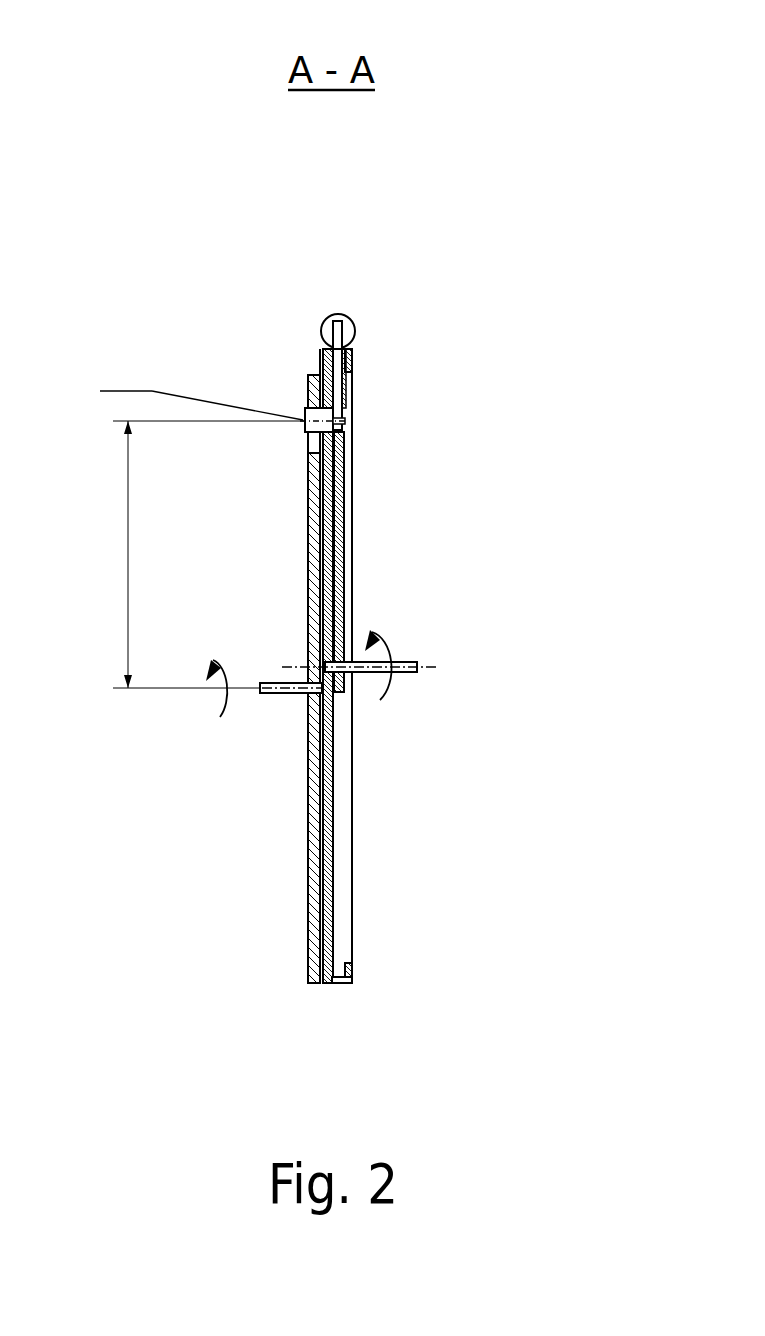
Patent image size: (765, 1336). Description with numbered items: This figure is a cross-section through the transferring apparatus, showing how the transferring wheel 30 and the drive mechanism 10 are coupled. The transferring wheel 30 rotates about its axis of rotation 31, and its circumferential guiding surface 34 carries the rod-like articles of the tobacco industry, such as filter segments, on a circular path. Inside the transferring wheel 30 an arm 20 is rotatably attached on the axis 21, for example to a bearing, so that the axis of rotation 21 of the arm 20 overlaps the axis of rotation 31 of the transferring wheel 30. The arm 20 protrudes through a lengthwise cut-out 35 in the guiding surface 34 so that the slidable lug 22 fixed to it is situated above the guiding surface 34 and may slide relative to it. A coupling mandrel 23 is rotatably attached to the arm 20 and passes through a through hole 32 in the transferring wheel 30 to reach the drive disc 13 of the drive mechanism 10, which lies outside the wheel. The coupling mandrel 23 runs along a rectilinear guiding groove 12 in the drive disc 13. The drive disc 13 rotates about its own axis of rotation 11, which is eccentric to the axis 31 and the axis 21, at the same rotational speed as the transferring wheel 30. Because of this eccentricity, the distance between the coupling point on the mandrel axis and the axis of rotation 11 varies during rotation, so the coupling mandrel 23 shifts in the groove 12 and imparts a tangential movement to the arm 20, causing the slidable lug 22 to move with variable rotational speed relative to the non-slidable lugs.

The drive mechanism 10 is at (307, 574).
The axis of rotation of the drive disc 11 is at (257, 690).
The guiding groove 12 is at (304, 408).
The drive disc 13 is at (310, 553).
The arm 20 is at (340, 518).
The axis of rotation of the arm 21 is at (420, 665).
The slidable lug 22 is at (338, 321).
The coupling mandrel 23 is at (307, 432).
The transferring wheel 30 is at (322, 351).
The axis of rotation of the transferring wheel 31 is at (404, 731).
The through hole 32 is at (334, 407).
The guiding surface 34 is at (350, 350).
The lengthwise cut-out 35 is at (347, 348).